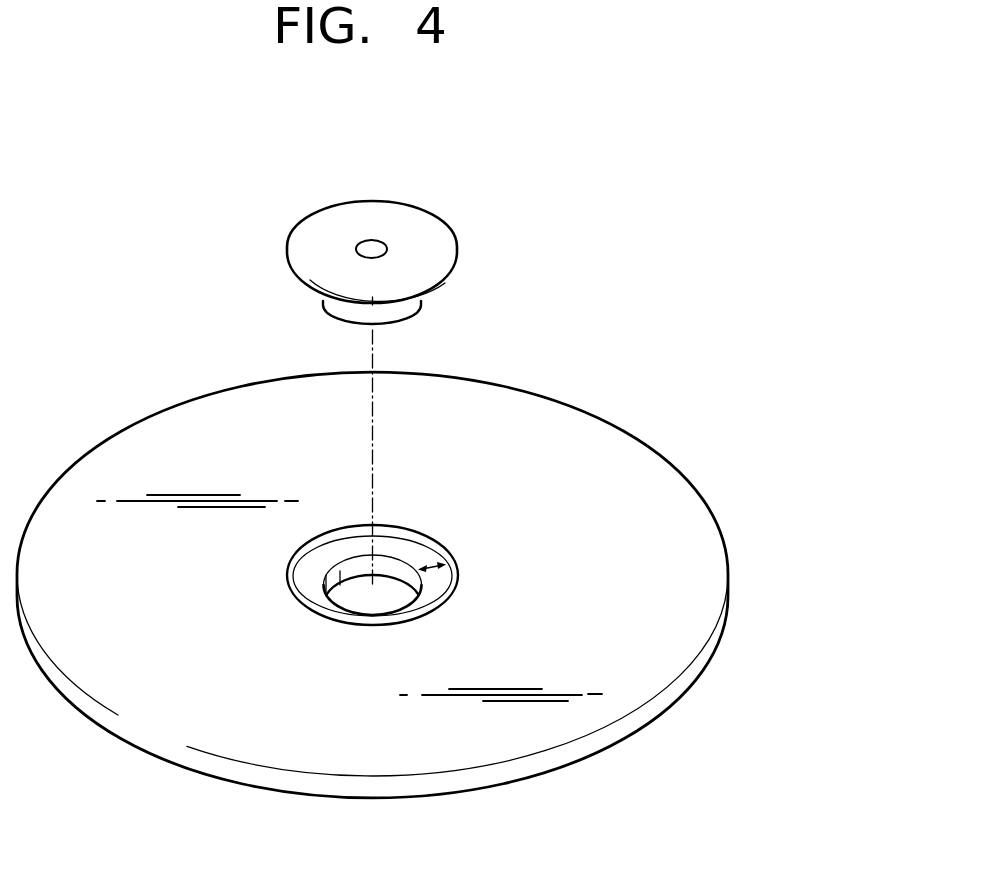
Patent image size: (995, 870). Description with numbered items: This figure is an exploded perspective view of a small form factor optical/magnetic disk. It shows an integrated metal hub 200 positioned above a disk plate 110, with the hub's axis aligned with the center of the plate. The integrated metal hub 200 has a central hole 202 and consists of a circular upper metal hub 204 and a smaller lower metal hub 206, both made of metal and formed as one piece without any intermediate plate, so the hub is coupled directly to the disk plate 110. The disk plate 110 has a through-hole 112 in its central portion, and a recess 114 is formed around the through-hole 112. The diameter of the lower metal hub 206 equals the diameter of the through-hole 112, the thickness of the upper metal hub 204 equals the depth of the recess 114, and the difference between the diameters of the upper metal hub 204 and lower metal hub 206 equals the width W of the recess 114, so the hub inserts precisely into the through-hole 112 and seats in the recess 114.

The disk plate 110 is at (649, 463).
The through-hole 112 is at (390, 592).
The recess 114 is at (320, 558).
The width of the recess W is at (445, 565).
The integrated metal hub 200 is at (443, 197).
The central hole 202 is at (378, 242).
The upper metal hub 204 is at (458, 251).
The lower metal hub 206 is at (404, 311).